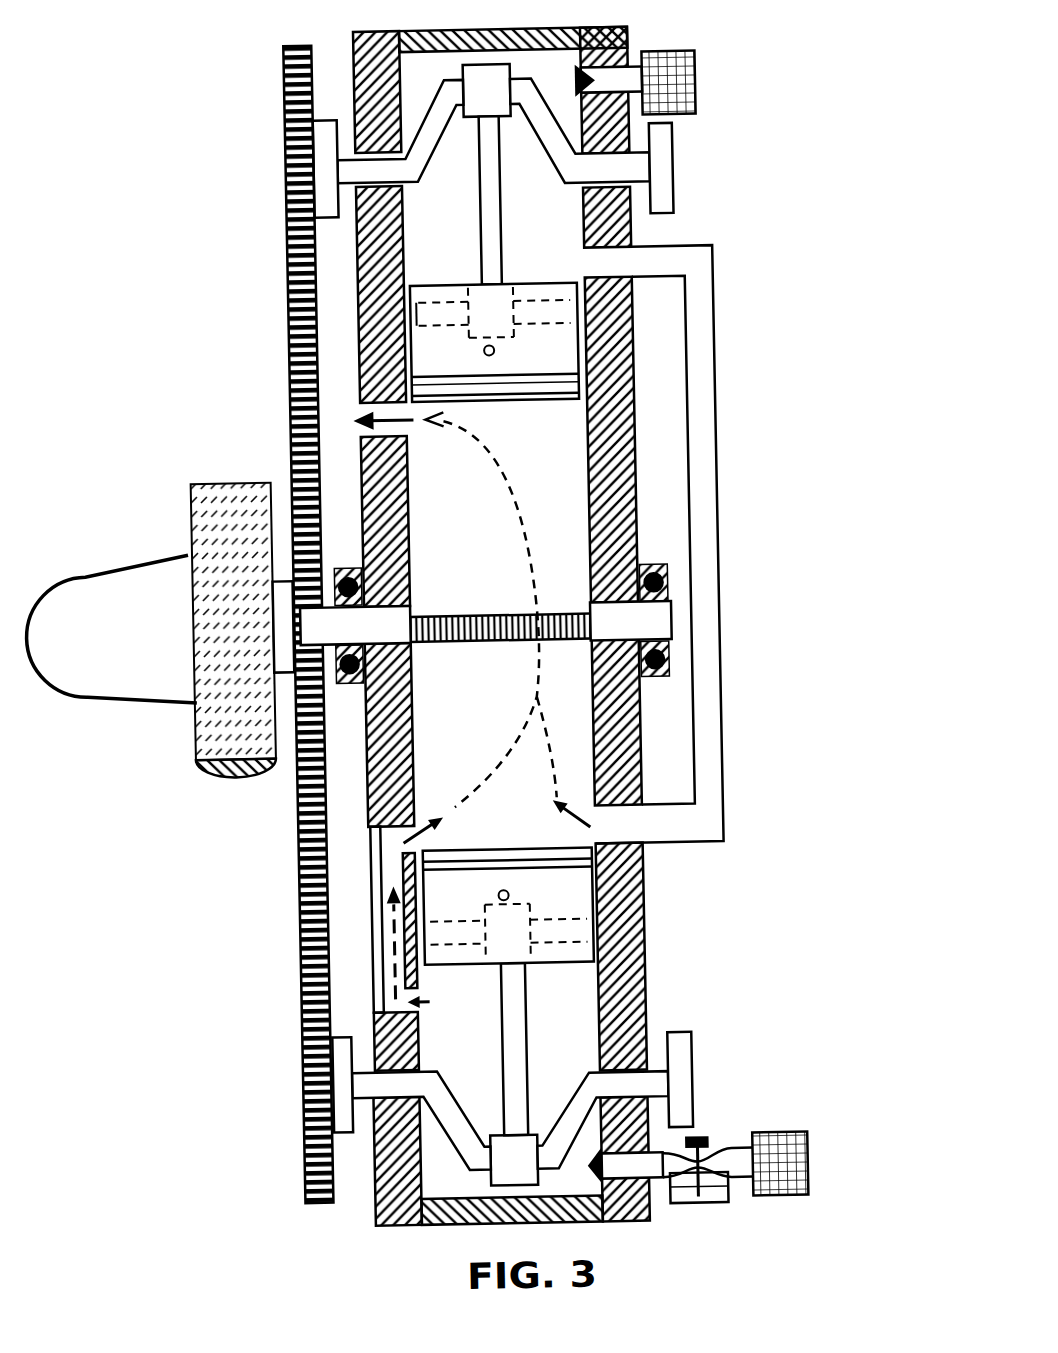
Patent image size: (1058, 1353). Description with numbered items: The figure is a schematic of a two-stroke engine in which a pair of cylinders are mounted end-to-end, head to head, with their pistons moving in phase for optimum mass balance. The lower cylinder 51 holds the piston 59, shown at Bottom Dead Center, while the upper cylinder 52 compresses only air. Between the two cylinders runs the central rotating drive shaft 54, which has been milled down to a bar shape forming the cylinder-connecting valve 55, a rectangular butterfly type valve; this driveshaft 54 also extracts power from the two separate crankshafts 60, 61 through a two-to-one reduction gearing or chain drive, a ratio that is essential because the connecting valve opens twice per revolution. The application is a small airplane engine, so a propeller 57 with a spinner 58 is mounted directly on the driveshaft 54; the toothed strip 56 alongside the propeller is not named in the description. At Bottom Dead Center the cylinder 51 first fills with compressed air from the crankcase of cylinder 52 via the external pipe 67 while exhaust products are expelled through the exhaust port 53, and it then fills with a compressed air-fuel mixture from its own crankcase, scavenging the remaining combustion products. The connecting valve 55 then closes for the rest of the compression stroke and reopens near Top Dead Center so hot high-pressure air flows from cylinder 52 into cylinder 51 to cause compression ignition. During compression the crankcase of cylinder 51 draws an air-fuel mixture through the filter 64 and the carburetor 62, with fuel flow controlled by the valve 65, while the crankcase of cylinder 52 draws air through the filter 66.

The cylinder 51 is at (565, 724).
The cylinder 52 is at (535, 477).
The exhaust port 53 is at (335, 423).
The rotating drive shaft 54 is at (636, 623).
The cylinder-connecting valve 55 is at (579, 632).
The rack 56 is at (278, 809).
The propeller 57 is at (206, 774).
The spinner 58 is at (149, 589).
The piston 59 is at (556, 902).
The crankshaft 60 is at (323, 1090).
The crankshaft 61 is at (325, 180).
The carburetor 62 is at (539, 354).
The filter 64 is at (758, 1170).
The valve 65 is at (687, 1147).
The filter 66 is at (684, 76).
The external pipe 67 is at (678, 828).